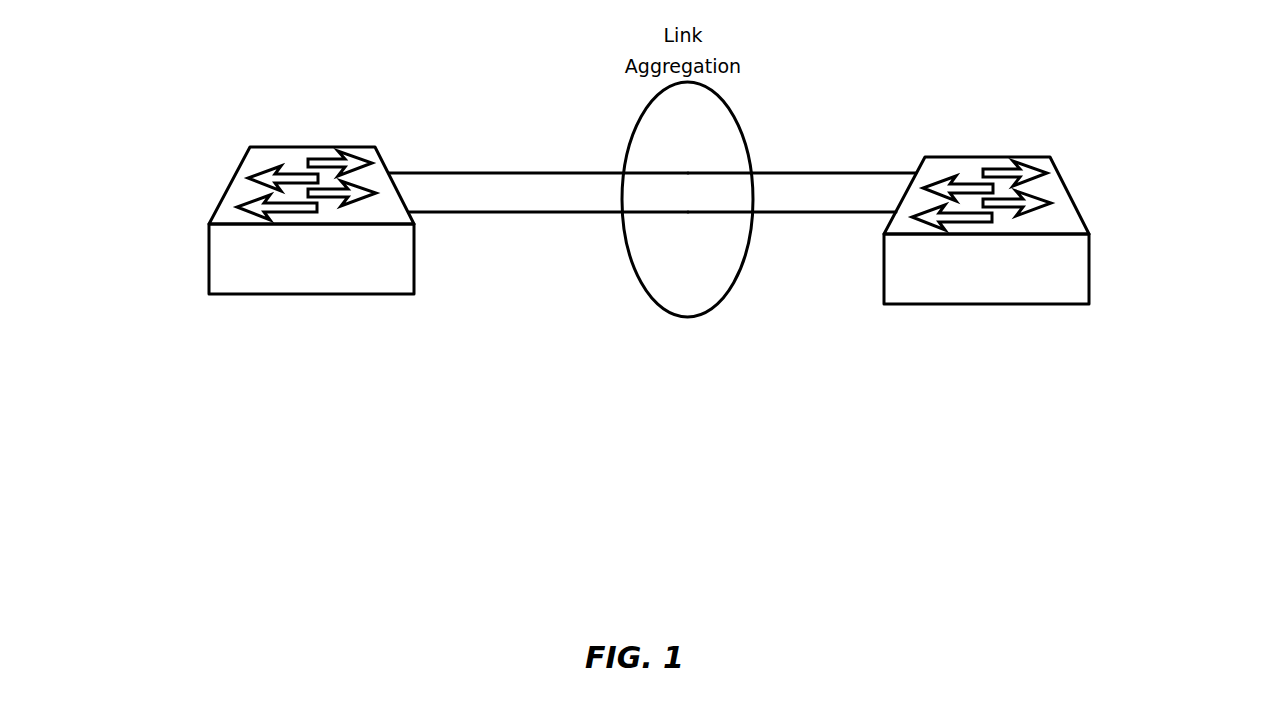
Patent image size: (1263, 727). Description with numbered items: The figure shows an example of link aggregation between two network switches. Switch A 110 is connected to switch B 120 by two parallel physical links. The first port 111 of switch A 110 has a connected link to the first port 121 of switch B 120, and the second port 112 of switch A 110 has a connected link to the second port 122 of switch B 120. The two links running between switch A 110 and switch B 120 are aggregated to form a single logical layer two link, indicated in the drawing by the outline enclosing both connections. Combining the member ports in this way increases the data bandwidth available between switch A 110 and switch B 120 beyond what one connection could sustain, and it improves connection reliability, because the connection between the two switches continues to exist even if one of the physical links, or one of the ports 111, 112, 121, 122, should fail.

The switch A 110 is at (209, 252).
The port-1 of switch A 111 is at (389, 172).
The port-2 of switch A 112 is at (414, 226).
The switch B 120 is at (1091, 258).
The port-1 of switch B 121 is at (916, 172).
The port-2 of switch B 122 is at (894, 214).